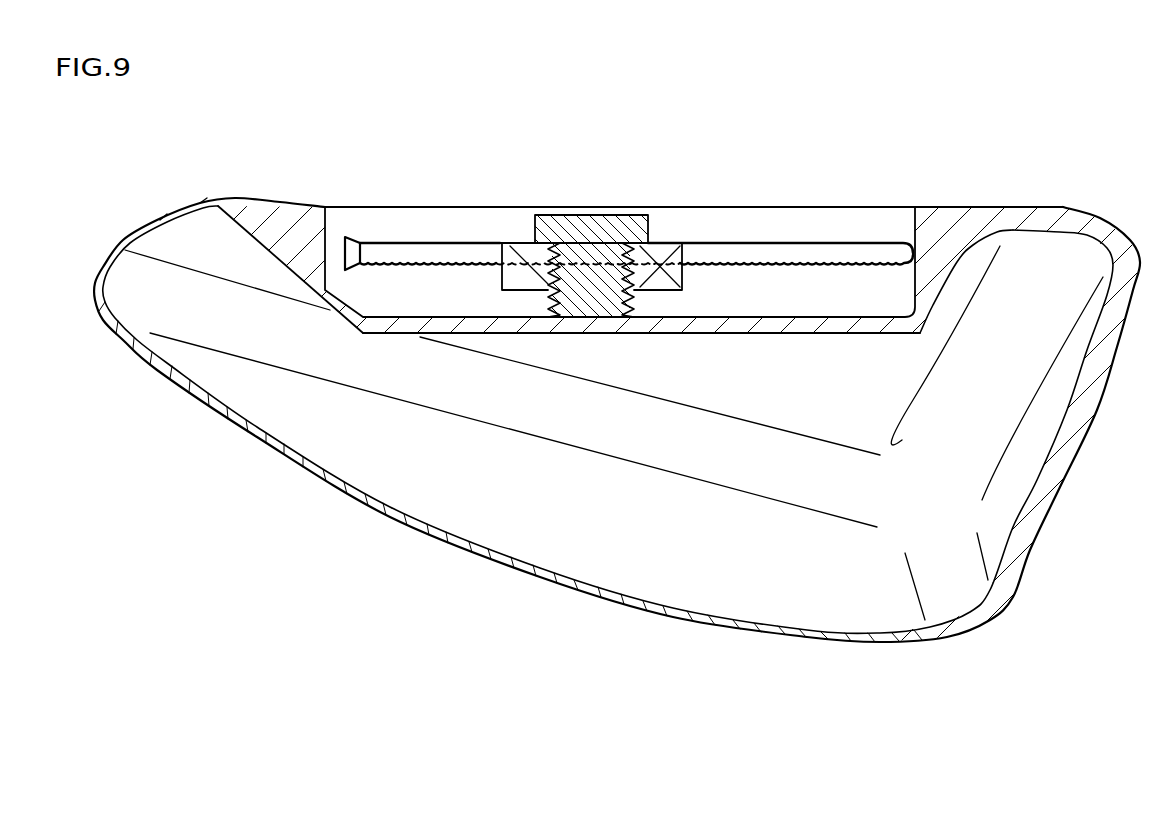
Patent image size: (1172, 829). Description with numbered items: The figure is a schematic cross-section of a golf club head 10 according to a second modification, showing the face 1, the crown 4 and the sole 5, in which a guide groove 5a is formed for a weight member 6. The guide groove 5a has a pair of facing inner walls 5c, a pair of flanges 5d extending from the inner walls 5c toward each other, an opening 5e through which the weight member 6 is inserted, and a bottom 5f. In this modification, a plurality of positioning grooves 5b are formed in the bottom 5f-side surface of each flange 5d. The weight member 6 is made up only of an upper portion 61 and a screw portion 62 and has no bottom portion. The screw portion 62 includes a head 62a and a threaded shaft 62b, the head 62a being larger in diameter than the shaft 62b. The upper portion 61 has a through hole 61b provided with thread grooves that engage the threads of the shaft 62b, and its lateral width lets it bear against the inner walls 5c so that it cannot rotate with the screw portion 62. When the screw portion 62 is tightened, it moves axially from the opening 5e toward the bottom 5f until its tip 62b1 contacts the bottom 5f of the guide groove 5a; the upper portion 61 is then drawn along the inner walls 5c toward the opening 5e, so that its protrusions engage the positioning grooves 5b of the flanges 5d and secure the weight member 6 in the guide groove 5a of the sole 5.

The golf club head 10 is at (1114, 179).
The face 1 is at (1098, 383).
The crown 4 is at (800, 643).
The sole 5 is at (1087, 206).
The guide groove 5a is at (713, 207).
The positioning grooves 5b is at (748, 260).
The inner walls 5c is at (790, 227).
The flanges 5d is at (820, 253).
The opening 5e is at (860, 207).
The bottom 5f is at (883, 313).
The weight member 6 is at (648, 132).
The upper portion 61 is at (525, 257).
The through hole 61b is at (548, 277).
The screw portion 62 is at (695, 165).
The head 62a is at (588, 233).
The shaft 62b is at (655, 270).
The tip 62b1 is at (562, 333).